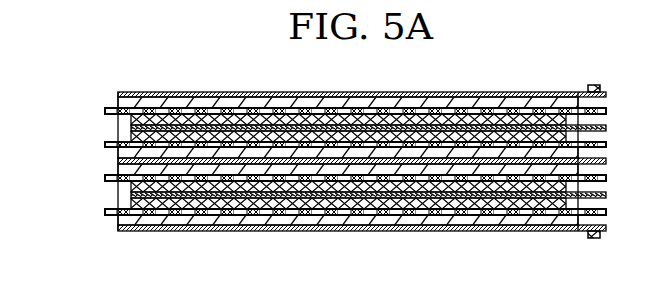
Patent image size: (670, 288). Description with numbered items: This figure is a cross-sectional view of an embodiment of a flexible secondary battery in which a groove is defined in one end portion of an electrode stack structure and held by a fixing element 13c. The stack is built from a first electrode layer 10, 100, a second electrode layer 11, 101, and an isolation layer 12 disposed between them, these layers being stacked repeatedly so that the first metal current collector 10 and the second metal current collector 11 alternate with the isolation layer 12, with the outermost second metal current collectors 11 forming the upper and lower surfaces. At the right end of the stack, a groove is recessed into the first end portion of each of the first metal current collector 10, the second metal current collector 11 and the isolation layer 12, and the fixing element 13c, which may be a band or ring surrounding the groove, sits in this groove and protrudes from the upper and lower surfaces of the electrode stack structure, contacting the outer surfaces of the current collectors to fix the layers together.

The first metal current collector 10 is at (118, 146).
The second metal current collector 11 is at (118, 95).
The isolation layer 12 is at (131, 116).
The first electrode layer 100 is at (131, 126).
The second electrode layer 101 is at (118, 102).
The fixing element 13c is at (595, 85).